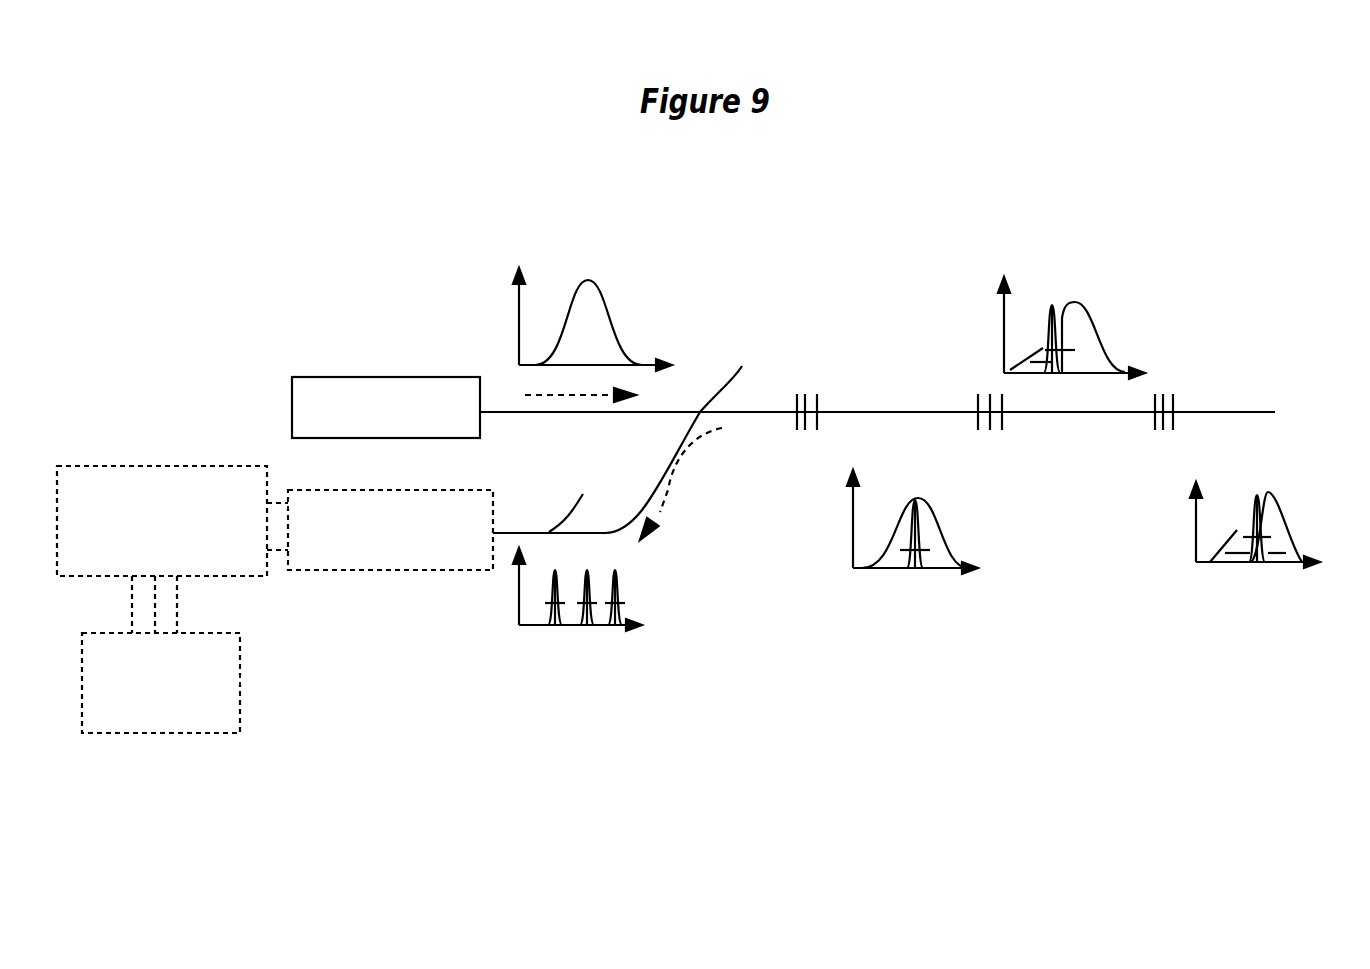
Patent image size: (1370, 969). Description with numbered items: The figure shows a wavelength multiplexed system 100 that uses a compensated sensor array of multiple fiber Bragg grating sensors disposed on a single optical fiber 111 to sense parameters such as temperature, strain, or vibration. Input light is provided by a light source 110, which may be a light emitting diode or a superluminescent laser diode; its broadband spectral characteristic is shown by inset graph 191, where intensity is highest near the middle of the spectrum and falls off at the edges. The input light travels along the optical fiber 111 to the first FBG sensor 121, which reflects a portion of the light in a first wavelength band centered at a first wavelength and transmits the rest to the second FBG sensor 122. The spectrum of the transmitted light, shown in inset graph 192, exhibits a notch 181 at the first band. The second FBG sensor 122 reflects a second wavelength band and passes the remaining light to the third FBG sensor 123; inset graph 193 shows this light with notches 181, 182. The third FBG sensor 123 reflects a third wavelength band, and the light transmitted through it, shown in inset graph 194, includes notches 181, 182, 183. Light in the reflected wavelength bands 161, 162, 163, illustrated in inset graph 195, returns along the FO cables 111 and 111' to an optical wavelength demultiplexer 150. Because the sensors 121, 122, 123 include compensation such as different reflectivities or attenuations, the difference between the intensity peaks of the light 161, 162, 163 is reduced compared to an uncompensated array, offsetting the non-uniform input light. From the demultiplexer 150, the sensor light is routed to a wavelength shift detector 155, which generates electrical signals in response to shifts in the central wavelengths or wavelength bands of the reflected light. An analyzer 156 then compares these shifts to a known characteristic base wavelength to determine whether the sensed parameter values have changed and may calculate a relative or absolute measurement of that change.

The wavelength multiplexed system 100 is at (828, 275).
The light source 110 is at (348, 376).
The optical fiber 111 is at (877, 431).
The FO cable 111' is at (576, 487).
The first FBG sensor 121 is at (818, 397).
The second FBG sensor 122 is at (1005, 420).
The third FBG sensor 123 is at (1178, 400).
The optical wavelength demultiplexer 150 is at (373, 575).
The wavelength shift detector 155 is at (153, 462).
The analyzer 156 is at (253, 693).
The wavelength band 161 is at (592, 627).
The wavelength band 162 is at (557, 584).
The wavelength band 163 is at (622, 588).
The notch 181 is at (1056, 306).
The notch 182 is at (1038, 351).
The notch 183 is at (1284, 530).
The inset graph 191 is at (614, 305).
The inset graph 192 is at (952, 545).
The inset graph 193 is at (1092, 337).
The inset graph 194 is at (1266, 492).
The inset graph 195 is at (712, 640).